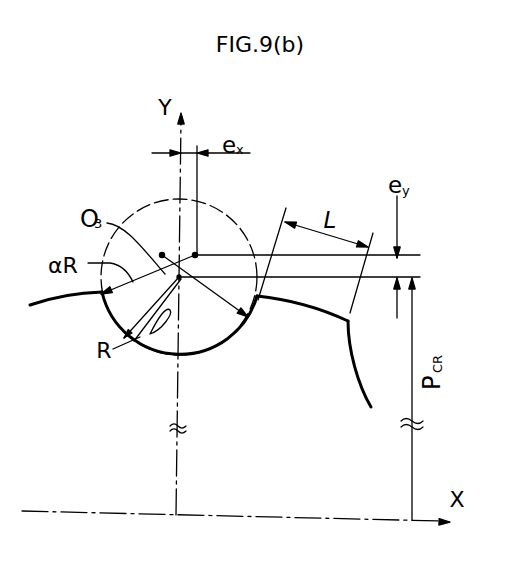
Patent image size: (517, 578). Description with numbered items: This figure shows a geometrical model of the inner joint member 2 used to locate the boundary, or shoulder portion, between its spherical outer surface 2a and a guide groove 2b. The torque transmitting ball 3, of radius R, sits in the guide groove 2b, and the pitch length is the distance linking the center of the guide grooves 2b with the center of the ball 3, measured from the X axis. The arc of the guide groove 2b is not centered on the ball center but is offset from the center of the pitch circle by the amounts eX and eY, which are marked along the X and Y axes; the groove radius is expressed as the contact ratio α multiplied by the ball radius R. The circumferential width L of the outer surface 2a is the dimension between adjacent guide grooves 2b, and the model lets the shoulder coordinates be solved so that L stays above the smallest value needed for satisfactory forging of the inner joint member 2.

The inner joint member 2 is at (57, 203).
The torque transmitting balls 3 is at (140, 207).
The outer surface 2a is at (302, 290).
The guide groove 2b is at (158, 341).